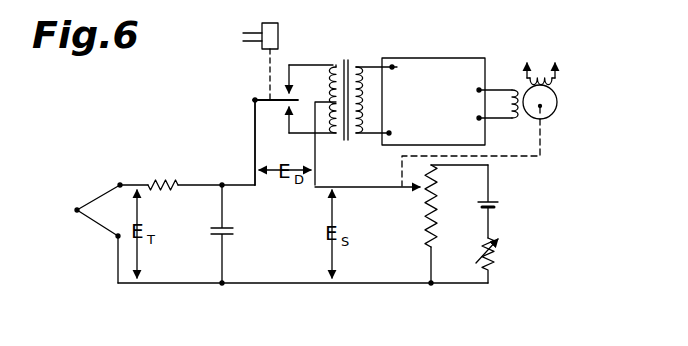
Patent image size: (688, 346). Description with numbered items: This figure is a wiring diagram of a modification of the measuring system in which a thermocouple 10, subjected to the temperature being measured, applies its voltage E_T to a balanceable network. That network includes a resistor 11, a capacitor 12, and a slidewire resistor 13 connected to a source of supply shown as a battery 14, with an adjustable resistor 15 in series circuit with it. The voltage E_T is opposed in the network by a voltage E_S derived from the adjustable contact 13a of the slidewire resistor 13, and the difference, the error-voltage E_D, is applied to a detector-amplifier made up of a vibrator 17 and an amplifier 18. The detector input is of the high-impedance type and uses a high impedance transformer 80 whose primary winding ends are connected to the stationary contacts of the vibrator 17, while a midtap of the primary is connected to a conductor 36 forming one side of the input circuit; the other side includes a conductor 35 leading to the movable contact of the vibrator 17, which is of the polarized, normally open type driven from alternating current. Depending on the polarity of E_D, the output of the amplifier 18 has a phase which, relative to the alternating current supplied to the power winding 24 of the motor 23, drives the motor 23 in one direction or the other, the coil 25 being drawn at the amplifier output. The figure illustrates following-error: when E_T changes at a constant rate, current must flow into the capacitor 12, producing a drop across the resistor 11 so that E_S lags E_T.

The thermocouple 10 is at (88, 200).
The resistor 11 is at (170, 178).
The capacitor 12 is at (235, 232).
The slidewire resistor 13 is at (427, 227).
The adjustable contact 13a is at (417, 193).
The battery 14 is at (500, 205).
The adjustable resistor 15 is at (505, 265).
The vibrator 17 is at (268, 72).
The amplifier 18 is at (418, 57).
The motor 23 is at (558, 104).
The power winding 24 is at (558, 72).
The output coil 25 is at (513, 89).
The conductor 35 is at (253, 128).
The conductor 36 is at (318, 158).
The high impedance transformer 80 is at (342, 62).